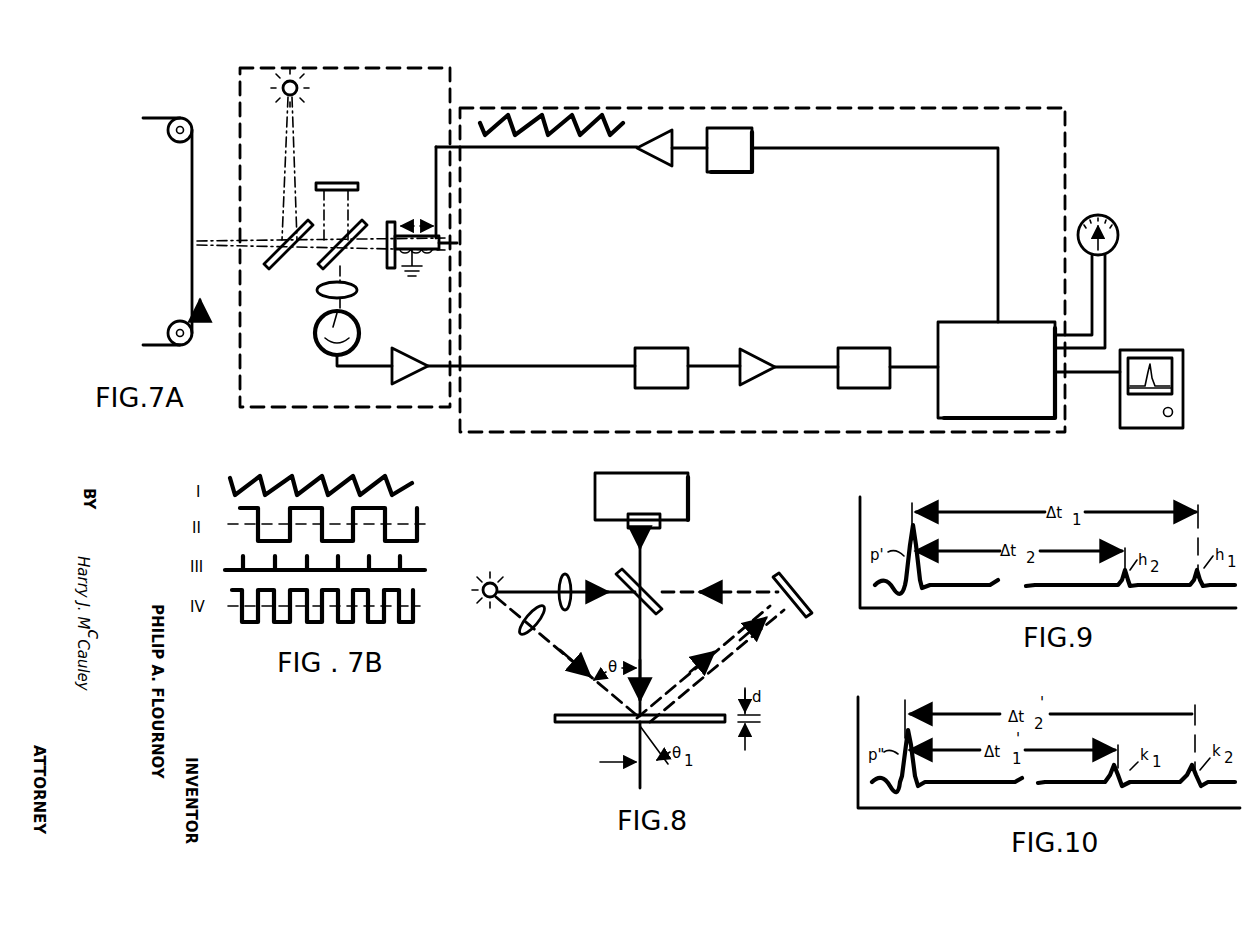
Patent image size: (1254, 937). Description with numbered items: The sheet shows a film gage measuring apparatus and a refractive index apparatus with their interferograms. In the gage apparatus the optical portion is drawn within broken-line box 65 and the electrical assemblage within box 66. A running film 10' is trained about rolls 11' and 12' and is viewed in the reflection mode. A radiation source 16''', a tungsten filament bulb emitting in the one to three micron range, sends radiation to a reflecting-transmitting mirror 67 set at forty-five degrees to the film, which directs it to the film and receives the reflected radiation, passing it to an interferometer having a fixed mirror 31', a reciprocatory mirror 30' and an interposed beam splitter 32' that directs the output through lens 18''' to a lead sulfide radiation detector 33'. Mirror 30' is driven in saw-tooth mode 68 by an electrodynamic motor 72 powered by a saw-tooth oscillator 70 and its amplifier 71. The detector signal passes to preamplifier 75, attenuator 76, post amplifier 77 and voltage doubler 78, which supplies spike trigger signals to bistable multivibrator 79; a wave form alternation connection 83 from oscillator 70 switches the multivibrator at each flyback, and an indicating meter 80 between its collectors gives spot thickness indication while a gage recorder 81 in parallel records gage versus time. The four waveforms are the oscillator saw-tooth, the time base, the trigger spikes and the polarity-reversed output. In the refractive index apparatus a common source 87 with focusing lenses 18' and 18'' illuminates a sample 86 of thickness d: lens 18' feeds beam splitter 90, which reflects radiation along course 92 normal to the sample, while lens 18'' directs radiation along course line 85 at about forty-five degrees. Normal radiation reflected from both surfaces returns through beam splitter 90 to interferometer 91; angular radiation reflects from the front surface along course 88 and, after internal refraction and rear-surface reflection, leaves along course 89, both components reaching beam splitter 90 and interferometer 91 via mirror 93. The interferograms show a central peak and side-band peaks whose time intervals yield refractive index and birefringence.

In FIG. 7A, the broken-line box 65 is at (238, 76).
In FIG. 7A, the radiation source 16''' is at (308, 154).
In FIG. 7A, the roll 12' is at (164, 139).
In FIG. 7A, the running film 10' is at (171, 231).
In FIG. 7A, the roll 11' is at (167, 322).
In FIG. 7A, the fixed mirror 31' is at (337, 195).
In FIG. 7A, the beam splitter 32' is at (351, 230).
In FIG. 7A, the reciprocatory mirror 30' is at (422, 231).
In FIG. 7A, the reflecting-transmitting mirror 67 is at (288, 270).
In FIG. 7A, the lens 18''' is at (360, 289).
In FIG. 7A, the photosensitive radiation detector 33' is at (329, 338).
In FIG. 7A, the preamplifier 75 is at (392, 372).
In FIG. 7A, the electrodynamic motor 72 is at (460, 244).
In FIG. 7A, the saw-tooth mode 68 is at (571, 118).
In FIG. 7A, the amplifier 71 is at (650, 165).
In FIG. 7A, the saw-tooth oscillator 70 is at (752, 166).
In FIG. 7A, the box 66 is at (830, 110).
In FIG. 7A, the wave form alternation connection 83 is at (935, 148).
In FIG. 7A, the indicating meter 80 is at (1110, 218).
In FIG. 7A, the attenuator 76 is at (650, 334).
In FIG. 7A, the post amplifier 77 is at (757, 378).
In FIG. 7A, the voltage doubler 78 is at (855, 334).
In FIG. 7A, the bistable multivibrator 79 is at (938, 396).
In FIG. 7A, the gage recorder 81 is at (1120, 426).
In FIG. 8, the interferometer 91 is at (690, 496).
In FIG. 8, the common source 87 is at (496, 576).
In FIG. 8, the focusing lens 18' is at (566, 580).
In FIG. 8, the beam splitter 90 is at (612, 576).
In FIG. 8, the mirror 93 is at (788, 576).
In FIG. 8, the course 92 is at (623, 658).
In FIG. 8, the focusing lens 18'' is at (513, 623).
In FIG. 8, the course line 85 is at (565, 656).
In FIG. 8, the sample 86 is at (566, 712).
In FIG. 8, the course 88 is at (700, 650).
In FIG. 8, the course 89 is at (742, 642).